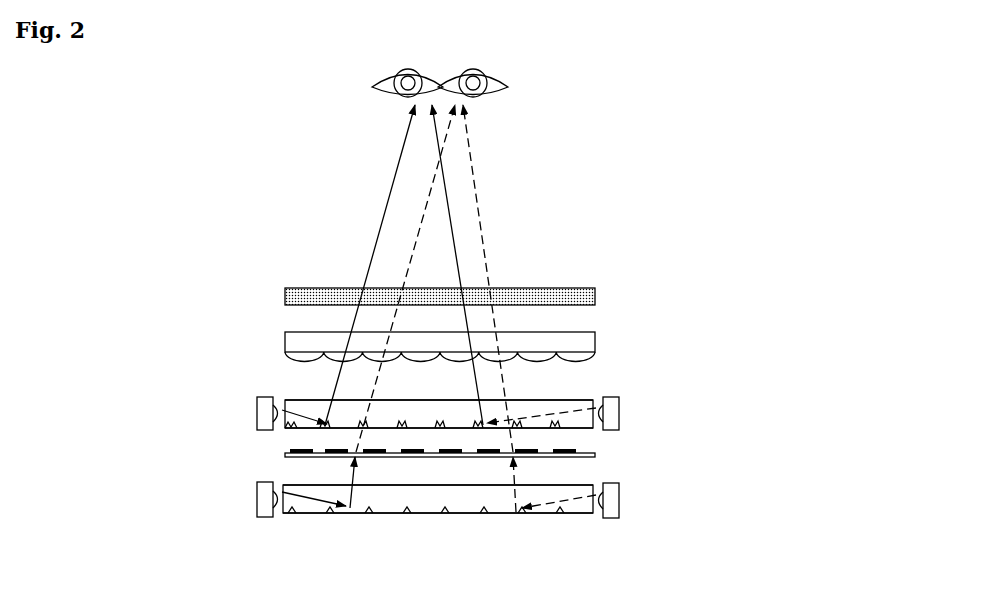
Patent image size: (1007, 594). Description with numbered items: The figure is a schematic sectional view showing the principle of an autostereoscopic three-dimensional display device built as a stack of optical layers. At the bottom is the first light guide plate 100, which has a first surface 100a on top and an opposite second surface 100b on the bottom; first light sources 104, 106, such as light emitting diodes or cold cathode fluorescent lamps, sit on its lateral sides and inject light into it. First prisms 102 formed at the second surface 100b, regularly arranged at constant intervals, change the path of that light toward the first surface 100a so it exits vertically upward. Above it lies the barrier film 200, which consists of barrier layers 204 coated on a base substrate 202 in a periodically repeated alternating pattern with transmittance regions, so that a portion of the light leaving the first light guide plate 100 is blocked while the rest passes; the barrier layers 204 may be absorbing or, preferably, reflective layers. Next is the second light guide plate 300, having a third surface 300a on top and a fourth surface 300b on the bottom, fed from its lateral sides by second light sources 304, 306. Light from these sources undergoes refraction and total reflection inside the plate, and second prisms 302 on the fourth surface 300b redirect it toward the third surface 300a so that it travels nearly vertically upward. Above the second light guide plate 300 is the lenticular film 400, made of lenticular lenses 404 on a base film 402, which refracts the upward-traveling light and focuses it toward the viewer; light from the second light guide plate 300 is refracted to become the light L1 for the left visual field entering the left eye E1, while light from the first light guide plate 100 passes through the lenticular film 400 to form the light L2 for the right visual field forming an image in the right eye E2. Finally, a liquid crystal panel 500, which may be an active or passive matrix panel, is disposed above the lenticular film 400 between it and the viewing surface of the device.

The first light guide plate 100 is at (442, 517).
The first surface 100a is at (490, 486).
The second surface 100b is at (540, 514).
The first prisms 102 is at (445, 516).
The first light source 104 is at (258, 503).
The first light source 106 is at (620, 502).
The barrier film 200 is at (442, 461).
The base substrate 202 is at (285, 457).
The barrier layers 204 is at (285, 453).
The second light guide plate 300 is at (442, 412).
The third surface 300a is at (533, 400).
The fourth surface 300b is at (578, 428).
The second prisms 302 is at (365, 429).
The second light source 304 is at (258, 413).
The second light source 306 is at (620, 410).
The lenticular film 400 is at (444, 351).
The base film 402 is at (285, 335).
The lenticular lenses 404 is at (300, 357).
The liquid crystal panel 500 is at (590, 284).
The light for a left visual field L1 is at (384, 208).
The light for a right visual field L2 is at (485, 240).
The left eye E1 is at (407, 73).
The right eye E2 is at (473, 73).